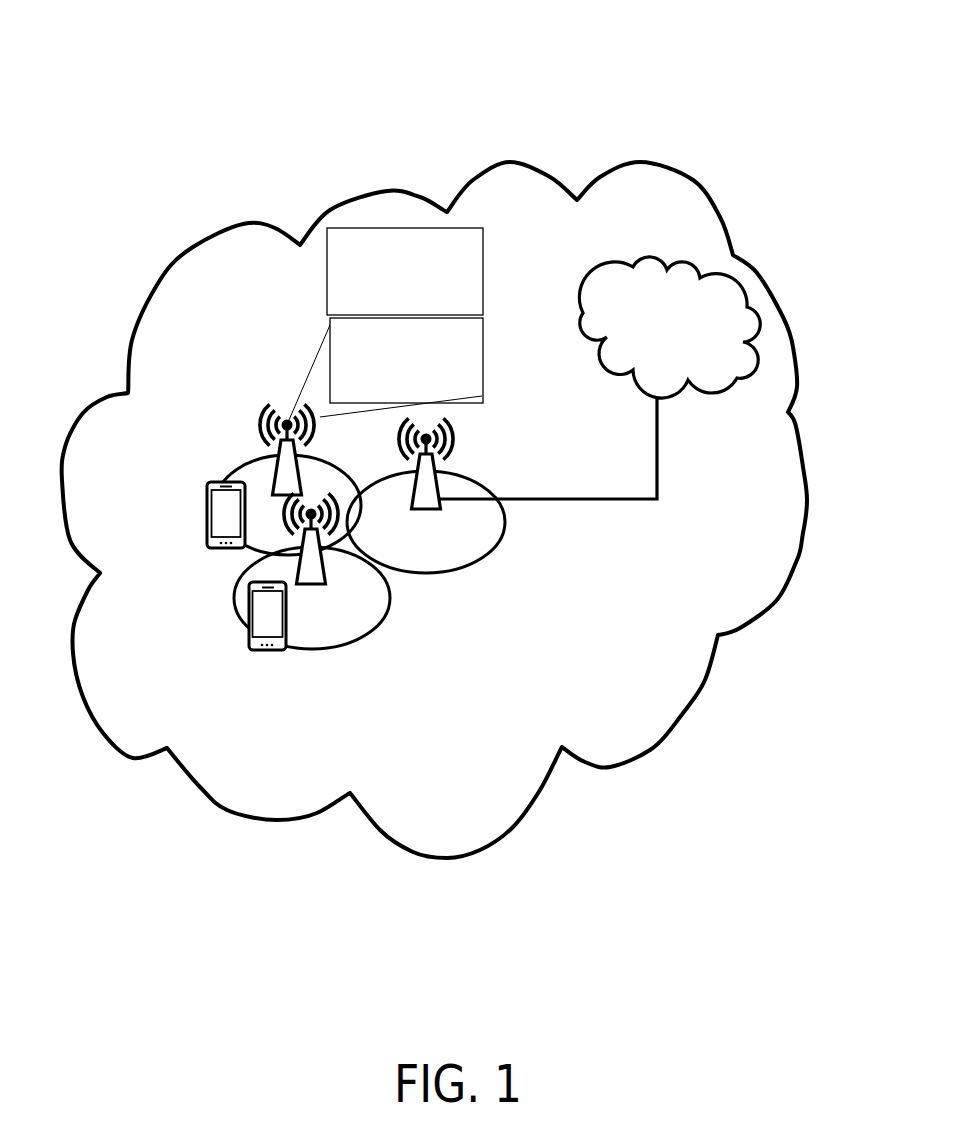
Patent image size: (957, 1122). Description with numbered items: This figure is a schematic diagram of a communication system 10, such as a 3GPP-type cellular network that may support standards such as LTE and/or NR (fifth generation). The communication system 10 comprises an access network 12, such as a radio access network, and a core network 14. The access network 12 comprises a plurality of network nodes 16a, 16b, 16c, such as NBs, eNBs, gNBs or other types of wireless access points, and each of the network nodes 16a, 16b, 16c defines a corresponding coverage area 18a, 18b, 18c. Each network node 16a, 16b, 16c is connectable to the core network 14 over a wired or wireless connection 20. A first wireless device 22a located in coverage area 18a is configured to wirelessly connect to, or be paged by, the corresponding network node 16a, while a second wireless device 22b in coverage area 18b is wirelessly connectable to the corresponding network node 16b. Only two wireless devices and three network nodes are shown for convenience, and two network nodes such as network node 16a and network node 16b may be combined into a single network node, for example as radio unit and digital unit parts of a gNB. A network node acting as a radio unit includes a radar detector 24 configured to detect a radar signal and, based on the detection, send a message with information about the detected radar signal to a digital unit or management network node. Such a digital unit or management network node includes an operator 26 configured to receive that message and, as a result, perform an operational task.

The communication system 10 is at (221, 50).
The access network 12 is at (656, 226).
The core network 14 is at (725, 337).
The network node 16a is at (255, 425).
The network node 16b is at (323, 578).
The network node 16c is at (455, 440).
The coverage area 18a is at (225, 478).
The coverage area 18b is at (390, 598).
The coverage area 18c is at (505, 525).
The wired or wireless connection 20 is at (658, 452).
The first wireless device 22a is at (208, 548).
The second wireless device 22b is at (248, 640).
The radar detector 24 is at (468, 392).
The operator 26 is at (473, 290).